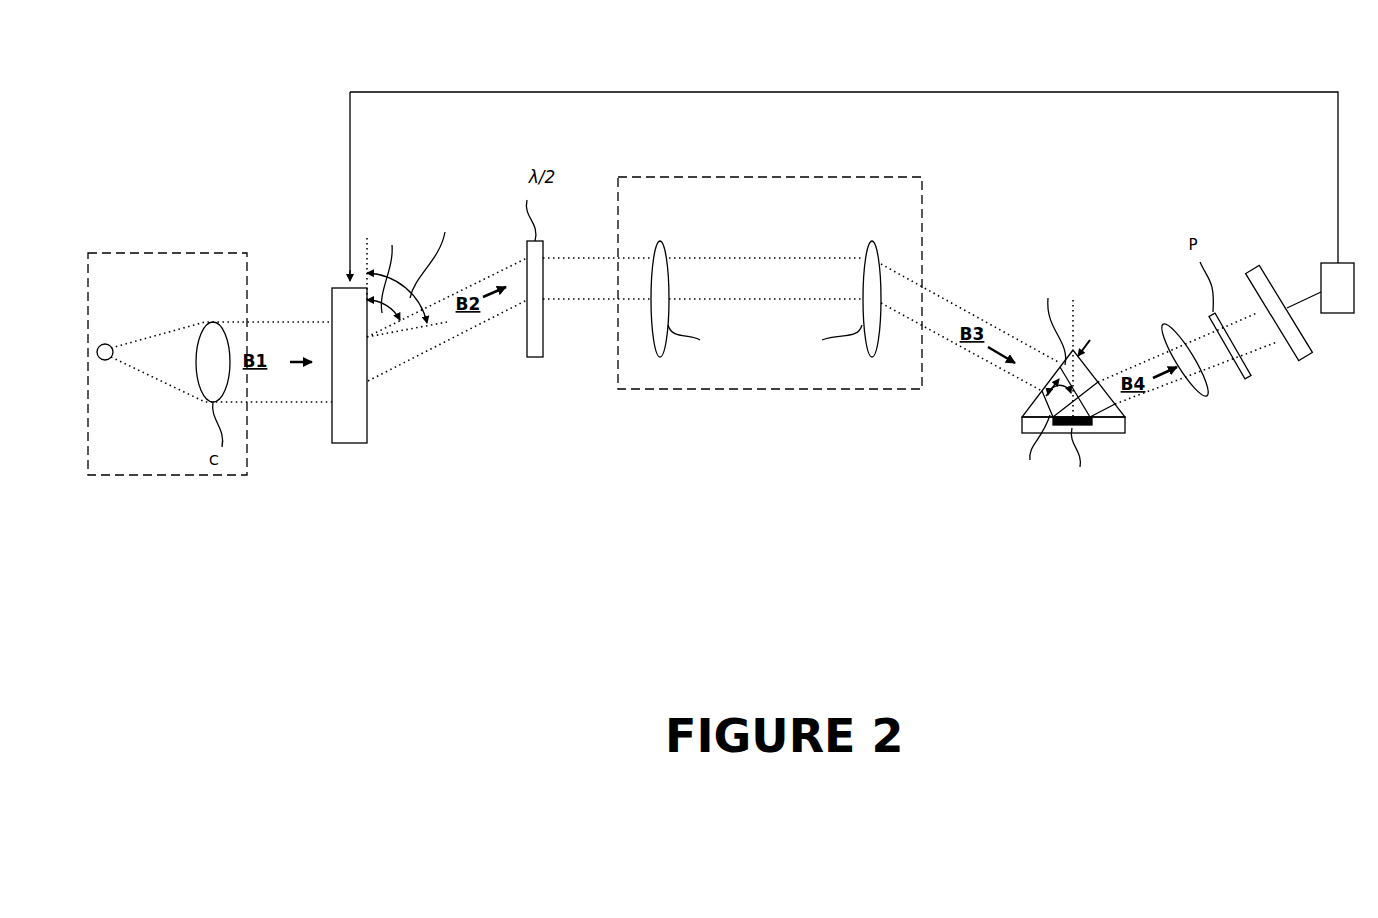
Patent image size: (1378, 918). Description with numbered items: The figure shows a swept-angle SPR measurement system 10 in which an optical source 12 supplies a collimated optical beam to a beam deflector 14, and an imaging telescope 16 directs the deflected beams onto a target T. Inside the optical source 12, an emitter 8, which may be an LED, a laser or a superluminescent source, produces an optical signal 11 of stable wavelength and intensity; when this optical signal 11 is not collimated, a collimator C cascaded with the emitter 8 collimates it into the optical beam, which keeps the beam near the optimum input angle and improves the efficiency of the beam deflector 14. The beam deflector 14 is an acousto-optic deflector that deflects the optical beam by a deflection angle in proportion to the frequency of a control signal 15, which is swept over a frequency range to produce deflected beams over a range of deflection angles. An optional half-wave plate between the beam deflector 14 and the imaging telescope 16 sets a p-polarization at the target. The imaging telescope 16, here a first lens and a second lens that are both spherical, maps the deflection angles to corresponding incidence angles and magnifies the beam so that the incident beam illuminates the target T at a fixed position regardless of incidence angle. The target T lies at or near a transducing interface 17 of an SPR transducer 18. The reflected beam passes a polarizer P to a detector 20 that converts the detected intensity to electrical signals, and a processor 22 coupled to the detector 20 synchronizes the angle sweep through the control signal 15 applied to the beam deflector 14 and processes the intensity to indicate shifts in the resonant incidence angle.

The emitter 8 is at (105, 360).
The swept-angle SPR measurement system 10 is at (1309, 587).
The optical signal 11 is at (167, 327).
The optical source 12 is at (165, 253).
The beam deflector 14 is at (350, 443).
The control signal 15 is at (470, 92).
The imaging telescope 16 is at (771, 177).
The transducing interface 17 is at (1110, 420).
The SPR transducer 18 is at (1028, 420).
The detector 20 is at (1303, 360).
The processor 22 is at (1320, 288).